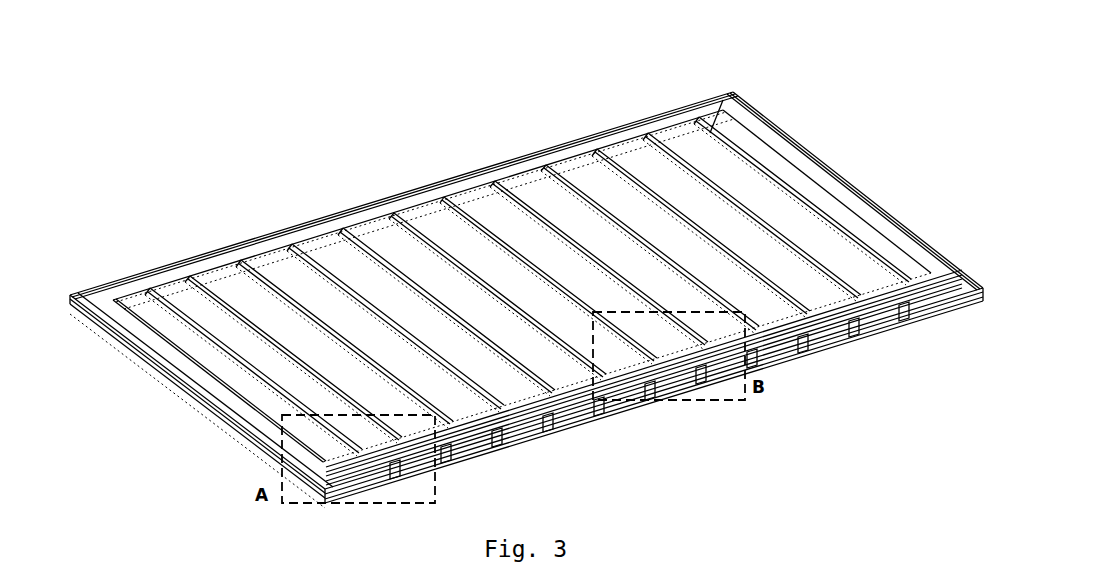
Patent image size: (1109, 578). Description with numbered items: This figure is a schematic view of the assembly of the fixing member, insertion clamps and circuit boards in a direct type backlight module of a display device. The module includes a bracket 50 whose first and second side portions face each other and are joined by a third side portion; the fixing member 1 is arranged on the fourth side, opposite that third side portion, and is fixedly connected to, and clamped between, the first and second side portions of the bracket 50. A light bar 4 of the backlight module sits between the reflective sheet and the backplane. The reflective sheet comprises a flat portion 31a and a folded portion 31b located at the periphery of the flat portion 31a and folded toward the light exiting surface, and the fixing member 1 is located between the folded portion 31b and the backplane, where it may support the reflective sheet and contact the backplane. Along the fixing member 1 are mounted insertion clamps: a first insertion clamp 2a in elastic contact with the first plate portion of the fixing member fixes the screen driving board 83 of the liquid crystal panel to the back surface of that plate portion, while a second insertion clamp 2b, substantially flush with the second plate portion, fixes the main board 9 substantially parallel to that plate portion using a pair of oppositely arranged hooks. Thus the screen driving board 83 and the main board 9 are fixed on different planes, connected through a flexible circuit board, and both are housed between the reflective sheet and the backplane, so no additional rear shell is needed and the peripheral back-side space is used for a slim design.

The fixing member 1 is at (902, 305).
The bracket 50 is at (599, 122).
The light bar 4 is at (273, 283).
The flat portion 31a is at (350, 268).
The folded portion 31b is at (426, 208).
The first insertion clamp 2a is at (543, 433).
The second insertion clamp 2b is at (657, 402).
The screen driving board 83 is at (590, 420).
The main board 9 is at (730, 377).